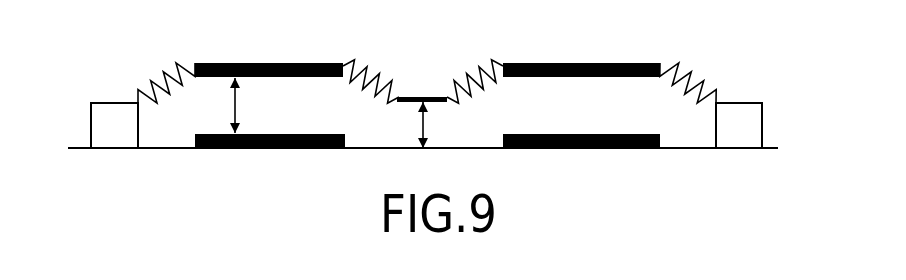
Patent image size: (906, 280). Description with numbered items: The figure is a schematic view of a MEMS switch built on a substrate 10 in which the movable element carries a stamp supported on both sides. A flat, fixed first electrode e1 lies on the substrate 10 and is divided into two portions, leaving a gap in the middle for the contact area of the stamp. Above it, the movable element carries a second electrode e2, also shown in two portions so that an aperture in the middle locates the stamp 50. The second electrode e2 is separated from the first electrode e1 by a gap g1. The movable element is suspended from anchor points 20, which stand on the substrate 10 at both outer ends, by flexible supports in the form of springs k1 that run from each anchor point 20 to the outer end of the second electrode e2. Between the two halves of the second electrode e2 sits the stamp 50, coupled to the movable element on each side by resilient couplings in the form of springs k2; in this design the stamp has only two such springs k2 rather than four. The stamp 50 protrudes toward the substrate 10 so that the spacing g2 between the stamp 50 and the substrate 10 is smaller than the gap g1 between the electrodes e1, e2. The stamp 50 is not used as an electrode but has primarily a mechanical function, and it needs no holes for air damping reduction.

The substrate 10 is at (423, 171).
The anchor points 20 is at (426, 125).
The stamp 50 is at (422, 83).
The first electrode e1 is at (427, 157).
The second electrode e2 is at (427, 54).
The spring k1 is at (424, 71).
The spring k2 is at (425, 64).
The gap g1 is at (252, 105).
The gap g2 is at (441, 125).